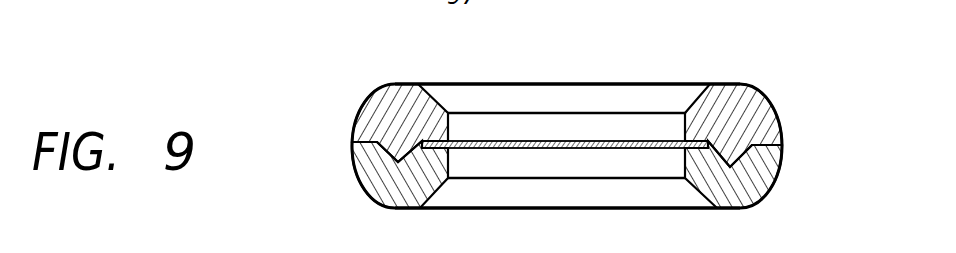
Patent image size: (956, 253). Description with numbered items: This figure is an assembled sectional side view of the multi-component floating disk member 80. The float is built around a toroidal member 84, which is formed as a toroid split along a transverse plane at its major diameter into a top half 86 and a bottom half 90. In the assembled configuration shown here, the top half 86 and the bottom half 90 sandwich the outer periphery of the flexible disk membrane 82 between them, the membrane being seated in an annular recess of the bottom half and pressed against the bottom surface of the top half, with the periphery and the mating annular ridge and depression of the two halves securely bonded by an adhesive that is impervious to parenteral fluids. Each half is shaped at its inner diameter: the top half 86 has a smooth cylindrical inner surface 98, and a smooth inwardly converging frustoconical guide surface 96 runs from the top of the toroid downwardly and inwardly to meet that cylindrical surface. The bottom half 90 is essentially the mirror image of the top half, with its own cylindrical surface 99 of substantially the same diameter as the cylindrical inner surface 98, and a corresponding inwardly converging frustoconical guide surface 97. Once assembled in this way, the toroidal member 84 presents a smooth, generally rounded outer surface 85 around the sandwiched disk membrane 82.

The floating disk member 80 is at (760, 59).
The disk membrane 82 is at (608, 140).
The toroidal member 84 is at (343, 150).
The outer surface 85 is at (358, 177).
The top half 86 is at (771, 85).
The bottom half 90 is at (777, 198).
The frustoconical guide surface 96 is at (425, 85).
The frustoconical guide surface 97 is at (424, 199).
The cylindrical inner surface 98 is at (522, 122).
The cylindrical surface 99 is at (673, 163).